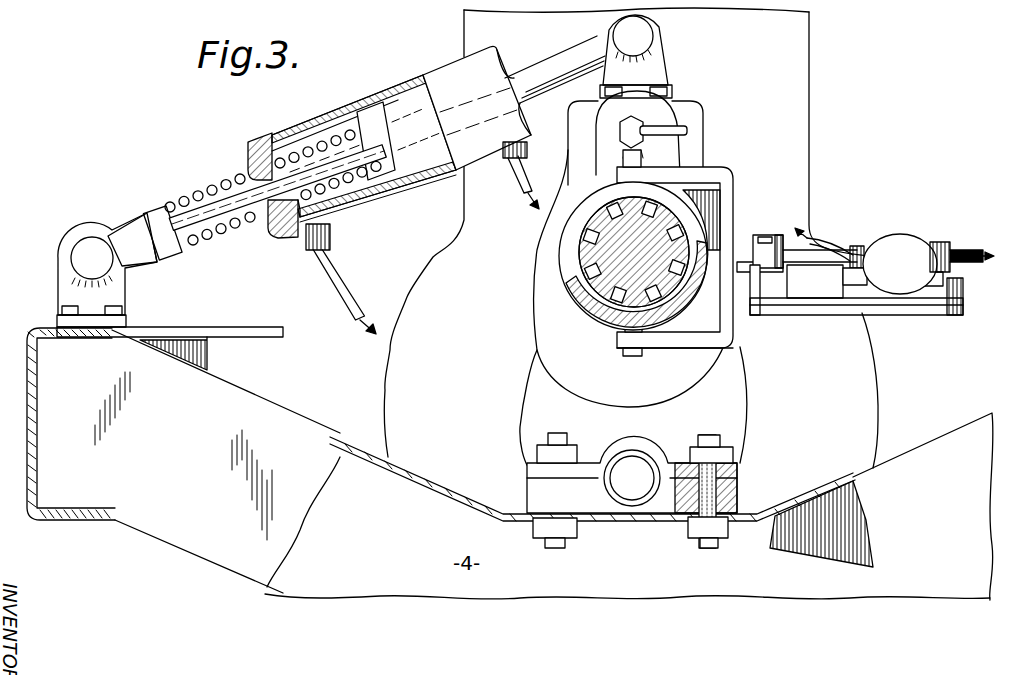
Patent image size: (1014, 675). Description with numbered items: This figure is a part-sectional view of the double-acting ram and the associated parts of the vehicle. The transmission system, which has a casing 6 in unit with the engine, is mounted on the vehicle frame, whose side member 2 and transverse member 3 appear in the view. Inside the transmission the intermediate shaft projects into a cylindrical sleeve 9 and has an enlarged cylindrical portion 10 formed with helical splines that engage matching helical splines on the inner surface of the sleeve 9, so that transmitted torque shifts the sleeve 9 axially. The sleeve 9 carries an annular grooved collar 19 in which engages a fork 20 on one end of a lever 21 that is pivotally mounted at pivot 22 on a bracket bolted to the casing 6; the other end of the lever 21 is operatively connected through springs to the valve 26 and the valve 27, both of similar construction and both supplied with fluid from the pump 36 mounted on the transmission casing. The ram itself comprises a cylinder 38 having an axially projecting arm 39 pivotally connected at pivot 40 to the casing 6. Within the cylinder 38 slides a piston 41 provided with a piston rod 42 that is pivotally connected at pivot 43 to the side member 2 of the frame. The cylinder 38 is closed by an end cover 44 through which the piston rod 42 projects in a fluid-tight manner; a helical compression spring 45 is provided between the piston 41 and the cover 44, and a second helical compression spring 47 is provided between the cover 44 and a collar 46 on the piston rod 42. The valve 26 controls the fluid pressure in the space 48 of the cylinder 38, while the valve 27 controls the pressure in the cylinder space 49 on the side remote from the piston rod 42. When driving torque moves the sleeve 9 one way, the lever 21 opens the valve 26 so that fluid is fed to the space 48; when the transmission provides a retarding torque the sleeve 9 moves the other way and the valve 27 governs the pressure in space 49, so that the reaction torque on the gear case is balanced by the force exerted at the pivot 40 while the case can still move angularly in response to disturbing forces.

The side member 2 is at (22, 342).
The transverse member 3 is at (210, 547).
The casing 6 is at (690, 135).
The cylindrical sleeve 9 is at (588, 223).
The enlarged cylindrical portion 10 is at (607, 268).
The annular grooved collar 19 is at (677, 210).
The fork 20 is at (713, 340).
The lever 21 is at (804, 263).
The pivot 22 is at (767, 242).
The valve 26 is at (346, 295).
The valve 27 is at (508, 196).
The pump 36 is at (657, 110).
The cylinder 38 is at (445, 73).
The axially projecting arm 39 is at (547, 67).
The pivot 40 is at (647, 38).
The piston 41 is at (407, 178).
The piston rod 42 is at (195, 212).
The pivot 43 is at (89, 252).
The end cover 44 is at (290, 213).
The helical compression spring 45 is at (290, 152).
The collar 46 is at (167, 259).
The helical compression spring 47 is at (207, 249).
The space 48 is at (353, 194).
The cylinder space 49 is at (382, 97).